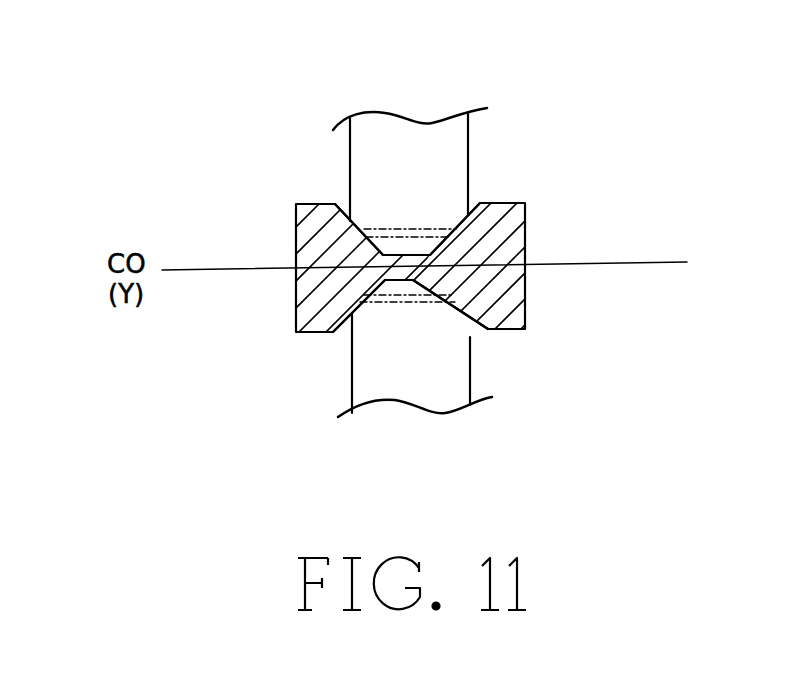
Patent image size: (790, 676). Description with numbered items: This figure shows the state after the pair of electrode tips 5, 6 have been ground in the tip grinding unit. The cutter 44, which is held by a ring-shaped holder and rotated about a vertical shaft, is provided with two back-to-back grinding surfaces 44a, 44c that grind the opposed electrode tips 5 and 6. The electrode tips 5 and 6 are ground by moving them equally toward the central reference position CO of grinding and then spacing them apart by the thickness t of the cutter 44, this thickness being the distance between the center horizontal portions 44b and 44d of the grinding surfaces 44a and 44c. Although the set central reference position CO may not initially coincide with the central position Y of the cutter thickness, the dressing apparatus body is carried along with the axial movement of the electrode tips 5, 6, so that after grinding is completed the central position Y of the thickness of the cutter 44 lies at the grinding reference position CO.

The electrode tip 5 is at (448, 145).
The electrode tip 6 is at (445, 378).
The cutter 44 is at (296, 321).
The grinding surface 44a is at (340, 207).
The center horizontal portion 44b is at (420, 254).
The grinding surface 44c is at (345, 325).
The center horizontal portion 44d is at (413, 281).